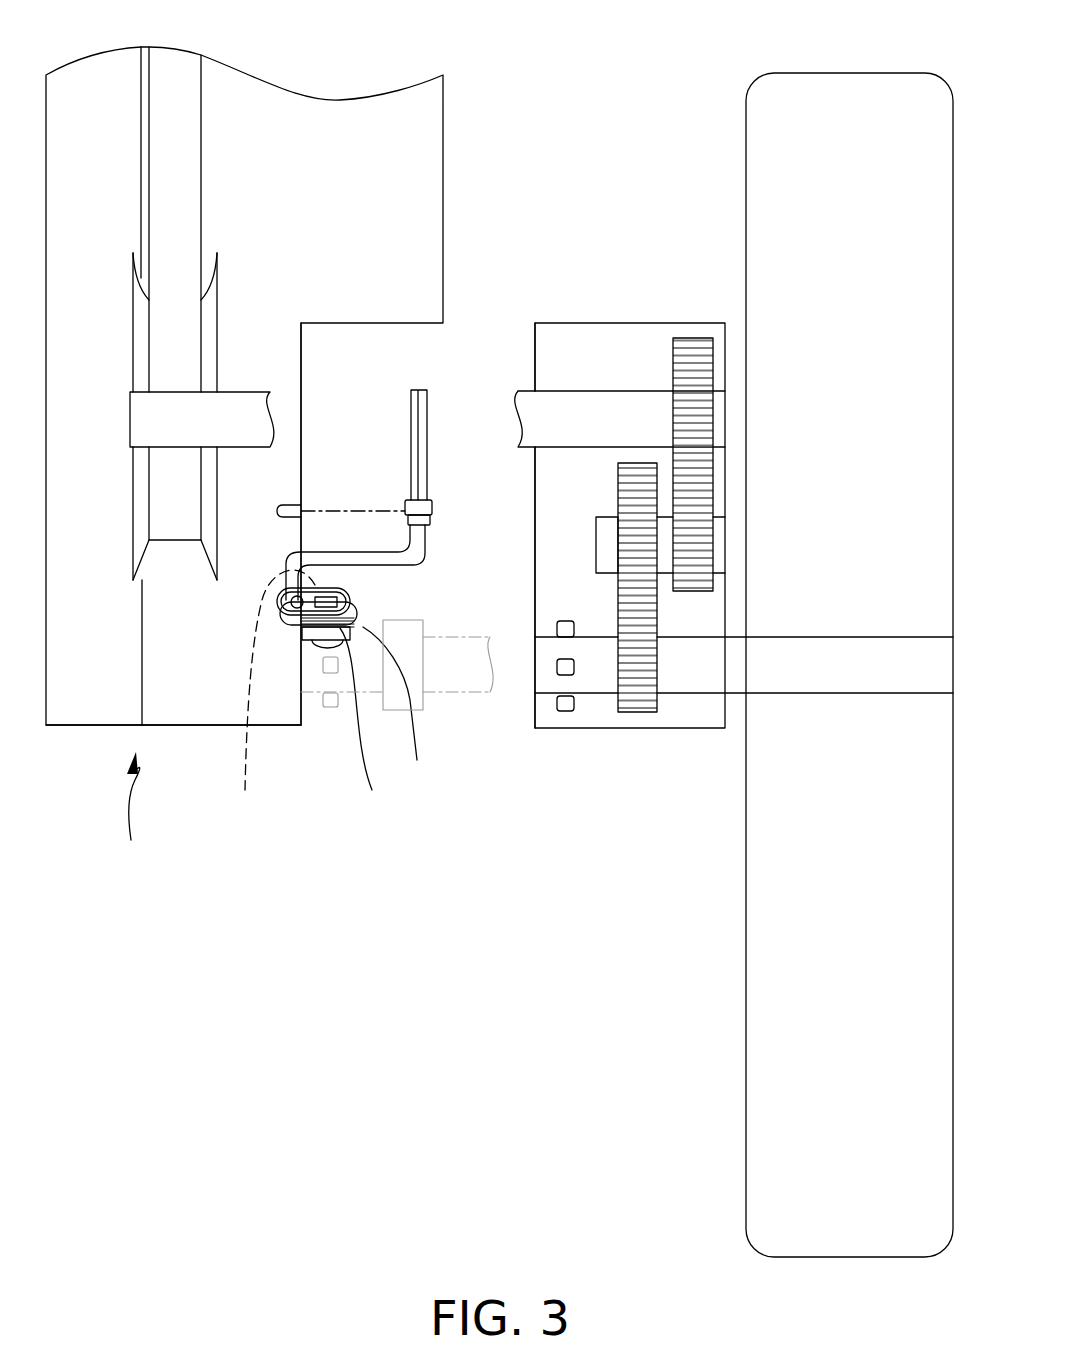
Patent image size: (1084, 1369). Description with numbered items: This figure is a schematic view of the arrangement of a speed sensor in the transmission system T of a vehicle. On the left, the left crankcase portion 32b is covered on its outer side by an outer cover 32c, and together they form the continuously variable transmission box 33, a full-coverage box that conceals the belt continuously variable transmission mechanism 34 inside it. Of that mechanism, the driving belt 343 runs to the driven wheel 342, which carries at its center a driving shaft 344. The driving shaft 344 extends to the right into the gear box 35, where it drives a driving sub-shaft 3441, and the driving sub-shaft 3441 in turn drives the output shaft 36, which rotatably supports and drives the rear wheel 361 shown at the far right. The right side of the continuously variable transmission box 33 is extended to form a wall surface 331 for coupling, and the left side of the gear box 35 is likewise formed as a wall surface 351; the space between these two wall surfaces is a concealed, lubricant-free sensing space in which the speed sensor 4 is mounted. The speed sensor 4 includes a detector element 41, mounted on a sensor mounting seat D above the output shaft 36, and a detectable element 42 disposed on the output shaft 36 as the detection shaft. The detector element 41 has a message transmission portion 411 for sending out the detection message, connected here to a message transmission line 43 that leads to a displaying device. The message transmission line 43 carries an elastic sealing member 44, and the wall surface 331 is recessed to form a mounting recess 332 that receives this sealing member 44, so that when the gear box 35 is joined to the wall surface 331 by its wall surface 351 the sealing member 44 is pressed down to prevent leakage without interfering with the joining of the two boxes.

The left crankcase portion 32b is at (420, 178).
The outer cover 32c is at (85, 708).
The continuously variable transmission box 33 is at (183, 740).
The wall surface 331 is at (303, 423).
The mounting recess 332 is at (288, 497).
The belt continuously variable transmission mechanism 34 is at (229, 270).
The driven wheel 342 is at (208, 343).
The driving belt 343 is at (192, 145).
The driving shaft 344 is at (583, 410).
The driving sub-shaft 3441 is at (600, 545).
The gear box 35 is at (643, 323).
The wall surface 351 is at (535, 358).
The output shaft 36 is at (842, 680).
The rear wheel 361 is at (760, 1000).
The speed sensor 4 is at (345, 600).
The detector element 41 is at (365, 723).
The message transmission portion 411 is at (269, 691).
The detectable element 42 is at (565, 713).
The message transmission line 43 is at (420, 426).
The sealing member 44 is at (432, 510).
The sensor mounting seat D is at (394, 707).
The transmission system T is at (131, 811).